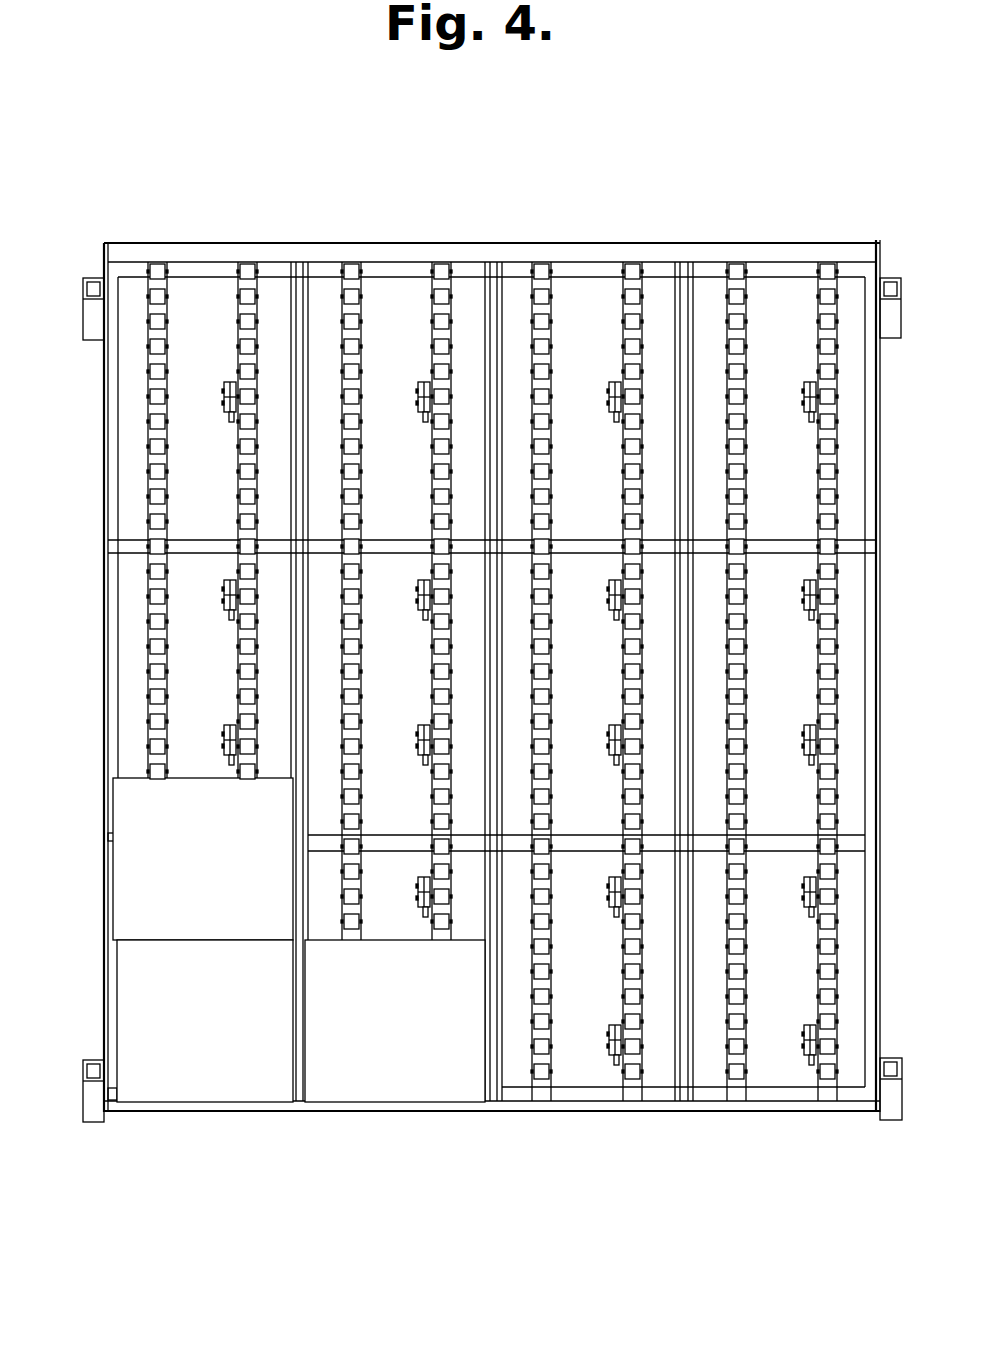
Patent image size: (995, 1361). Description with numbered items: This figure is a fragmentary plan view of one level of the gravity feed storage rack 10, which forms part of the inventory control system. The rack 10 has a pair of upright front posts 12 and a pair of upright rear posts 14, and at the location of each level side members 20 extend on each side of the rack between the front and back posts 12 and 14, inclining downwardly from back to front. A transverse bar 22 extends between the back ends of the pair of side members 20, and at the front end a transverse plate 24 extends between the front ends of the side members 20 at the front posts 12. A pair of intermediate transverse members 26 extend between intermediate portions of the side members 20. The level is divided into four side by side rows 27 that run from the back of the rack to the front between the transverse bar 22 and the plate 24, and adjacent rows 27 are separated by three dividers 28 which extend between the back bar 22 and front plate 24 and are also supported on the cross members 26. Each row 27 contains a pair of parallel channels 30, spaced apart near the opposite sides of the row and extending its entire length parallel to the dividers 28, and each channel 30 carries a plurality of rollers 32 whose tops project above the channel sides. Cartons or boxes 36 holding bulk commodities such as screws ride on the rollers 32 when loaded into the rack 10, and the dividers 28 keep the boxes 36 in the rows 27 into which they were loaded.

The gravity feed storage rack 10 is at (485, 707).
The front posts 12 is at (93, 1100).
The rear posts 14 is at (92, 322).
The side members 20 is at (113, 570).
The transverse bar 22 is at (452, 262).
The transverse plate 24 is at (597, 1112).
The intermediate transverse members 26 is at (565, 842).
The rows 27 is at (202, 260).
The dividers 28 is at (300, 792).
The channels 30 is at (165, 481).
The rollers 32 is at (492, 671).
The boxes 36 is at (137, 855).